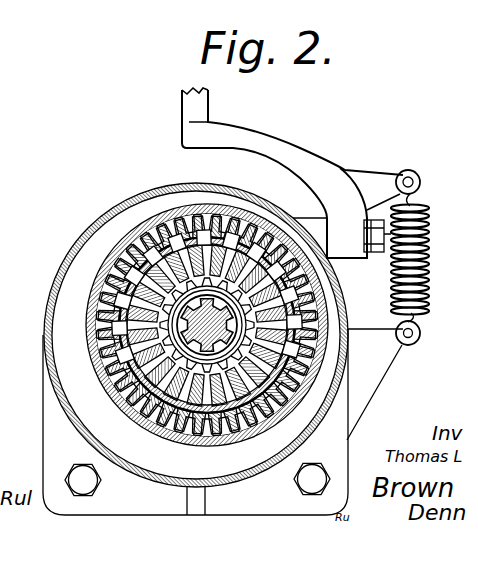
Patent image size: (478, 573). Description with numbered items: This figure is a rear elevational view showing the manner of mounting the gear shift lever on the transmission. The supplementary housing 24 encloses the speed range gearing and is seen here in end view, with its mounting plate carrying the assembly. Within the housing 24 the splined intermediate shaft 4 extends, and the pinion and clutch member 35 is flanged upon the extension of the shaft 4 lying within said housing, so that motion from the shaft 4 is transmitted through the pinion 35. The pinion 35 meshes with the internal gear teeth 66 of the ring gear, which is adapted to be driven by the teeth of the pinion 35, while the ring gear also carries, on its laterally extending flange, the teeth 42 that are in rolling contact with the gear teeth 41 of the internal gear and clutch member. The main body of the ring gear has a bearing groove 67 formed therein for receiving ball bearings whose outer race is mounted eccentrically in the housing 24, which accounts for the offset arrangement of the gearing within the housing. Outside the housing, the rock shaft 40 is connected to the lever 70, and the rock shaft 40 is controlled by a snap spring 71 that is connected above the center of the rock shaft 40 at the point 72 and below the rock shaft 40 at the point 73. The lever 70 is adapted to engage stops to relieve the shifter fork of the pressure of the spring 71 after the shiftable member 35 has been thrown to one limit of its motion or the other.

The intermediate shaft 4 is at (214, 335).
The supplementary housing 24 is at (76, 246).
The pinion and clutch member 35 is at (207, 339).
The rock shaft 40 is at (385, 232).
The gear teeth 41 is at (138, 222).
The teeth of the ring gear member 42 is at (122, 297).
The internal gear teeth 66 is at (202, 345).
The bearing groove 67 is at (100, 332).
The lever 70 is at (200, 110).
The snap spring 71 is at (431, 263).
The upper spring connection 72 is at (414, 178).
The lower spring connection 73 is at (420, 337).